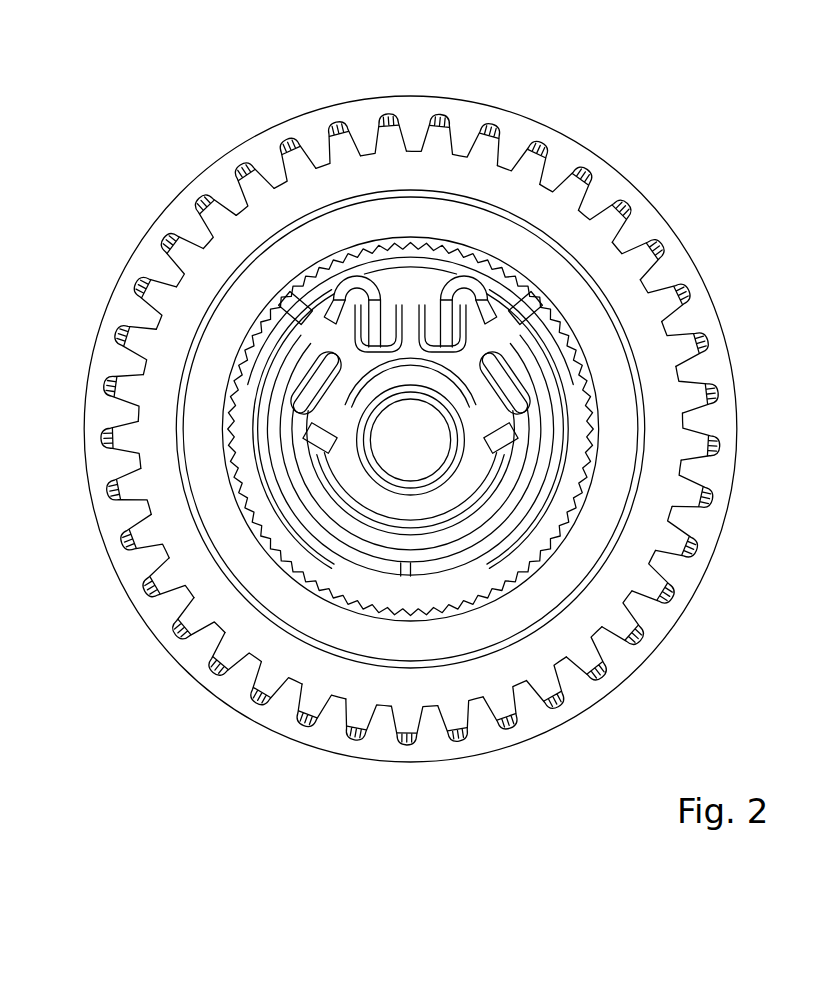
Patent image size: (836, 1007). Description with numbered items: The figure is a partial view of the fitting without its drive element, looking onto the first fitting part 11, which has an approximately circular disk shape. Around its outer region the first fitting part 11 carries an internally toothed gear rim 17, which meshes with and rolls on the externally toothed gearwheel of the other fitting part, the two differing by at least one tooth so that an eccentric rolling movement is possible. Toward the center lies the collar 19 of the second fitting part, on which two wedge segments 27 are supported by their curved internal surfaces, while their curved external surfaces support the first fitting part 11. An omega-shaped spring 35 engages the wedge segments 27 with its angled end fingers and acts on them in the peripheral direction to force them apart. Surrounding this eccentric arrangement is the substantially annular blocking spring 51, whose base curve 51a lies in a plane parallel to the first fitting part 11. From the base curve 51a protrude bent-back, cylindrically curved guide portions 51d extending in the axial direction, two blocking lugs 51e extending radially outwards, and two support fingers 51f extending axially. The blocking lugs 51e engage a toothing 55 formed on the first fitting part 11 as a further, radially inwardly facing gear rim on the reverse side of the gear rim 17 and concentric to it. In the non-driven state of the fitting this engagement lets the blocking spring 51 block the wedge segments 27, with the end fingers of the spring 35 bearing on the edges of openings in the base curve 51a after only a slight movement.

The first fitting part 11 is at (680, 231).
The gear rim 17 is at (565, 713).
The collar 19 is at (460, 485).
The wedge segments 27 is at (530, 488).
The omega-shaped spring 35 is at (588, 443).
The blocking spring 51 is at (440, 263).
The base curve 51a is at (378, 280).
The guide portions 51d is at (530, 423).
The blocking lugs 51e is at (520, 305).
The support fingers 51f is at (522, 372).
The toothing 55 is at (550, 455).